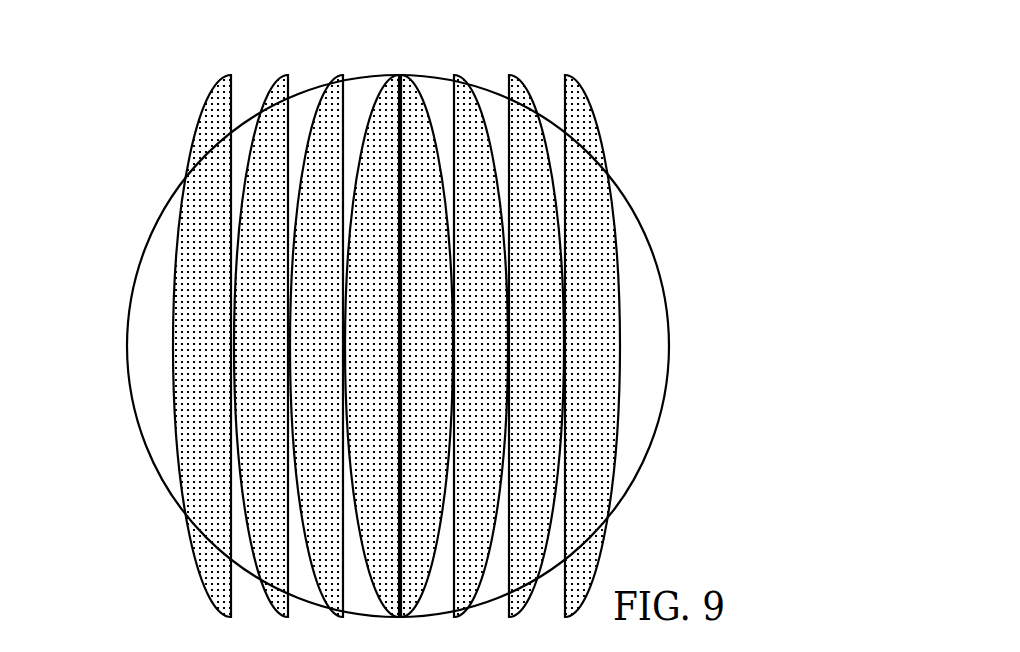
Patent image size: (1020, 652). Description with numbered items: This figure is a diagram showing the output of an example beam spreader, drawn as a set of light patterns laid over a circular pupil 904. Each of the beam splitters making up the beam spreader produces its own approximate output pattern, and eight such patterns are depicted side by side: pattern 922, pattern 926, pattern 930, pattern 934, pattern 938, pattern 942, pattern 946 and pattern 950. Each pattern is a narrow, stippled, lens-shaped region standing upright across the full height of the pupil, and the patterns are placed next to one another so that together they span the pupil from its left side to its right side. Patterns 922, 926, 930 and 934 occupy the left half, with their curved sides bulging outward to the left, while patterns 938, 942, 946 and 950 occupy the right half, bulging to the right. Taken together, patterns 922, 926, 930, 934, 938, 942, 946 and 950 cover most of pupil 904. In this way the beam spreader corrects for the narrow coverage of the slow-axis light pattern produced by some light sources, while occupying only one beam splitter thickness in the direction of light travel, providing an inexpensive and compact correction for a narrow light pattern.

The pupil 904 is at (128, 348).
The pattern 922 is at (209, 112).
The pattern 926 is at (280, 88).
The pattern 930 is at (322, 113).
The pattern 934 is at (377, 97).
The pattern 938 is at (415, 95).
The pattern 942 is at (475, 115).
The pattern 946 is at (517, 87).
The pattern 950 is at (587, 112).